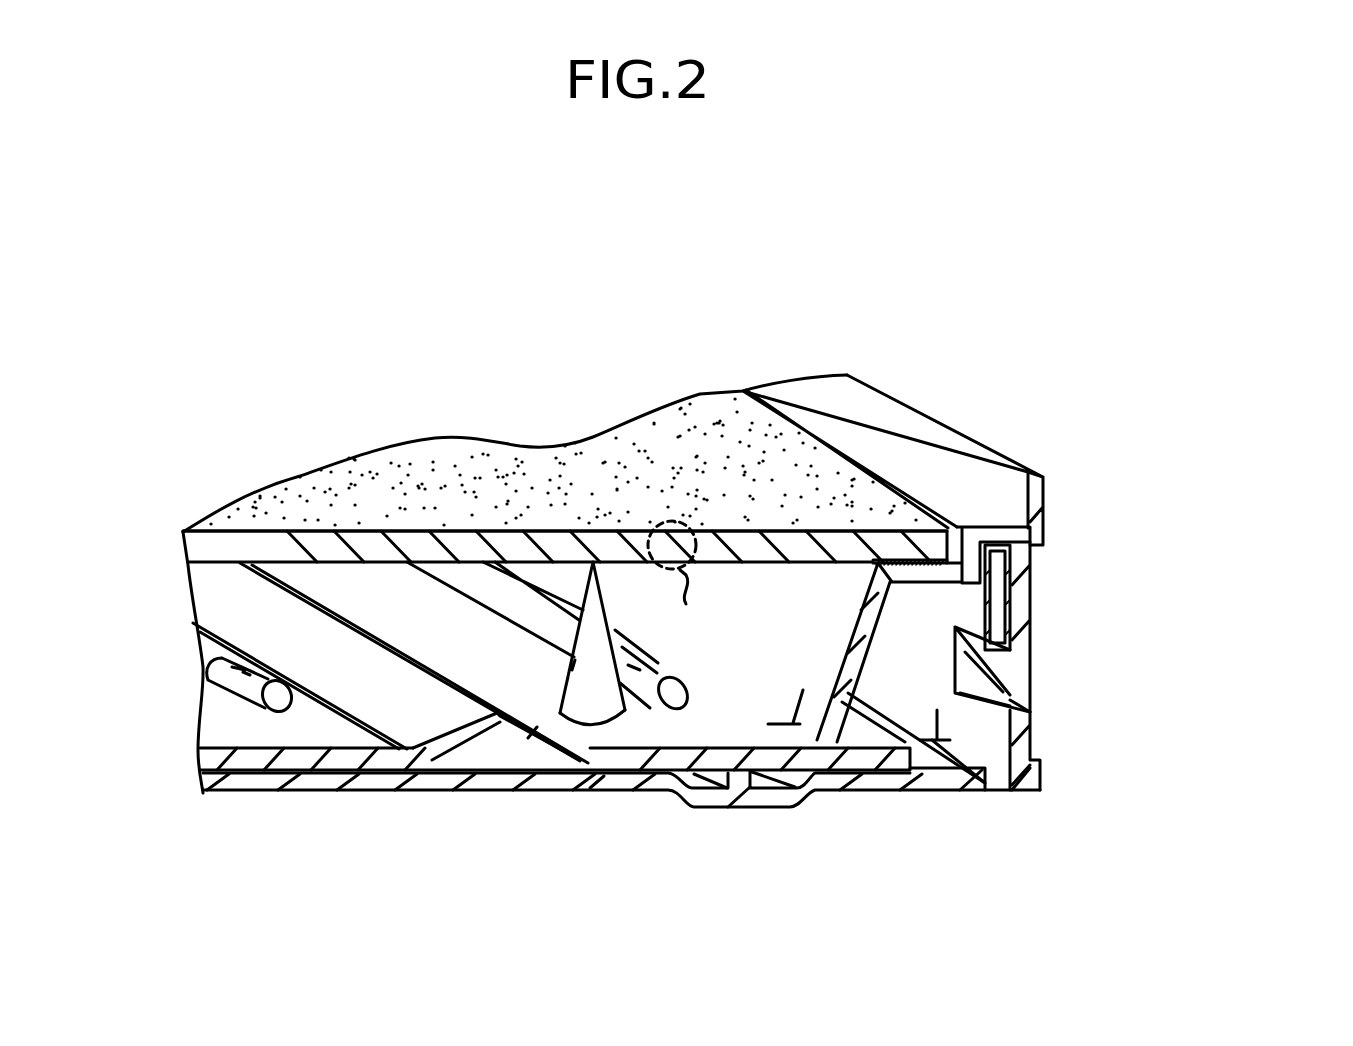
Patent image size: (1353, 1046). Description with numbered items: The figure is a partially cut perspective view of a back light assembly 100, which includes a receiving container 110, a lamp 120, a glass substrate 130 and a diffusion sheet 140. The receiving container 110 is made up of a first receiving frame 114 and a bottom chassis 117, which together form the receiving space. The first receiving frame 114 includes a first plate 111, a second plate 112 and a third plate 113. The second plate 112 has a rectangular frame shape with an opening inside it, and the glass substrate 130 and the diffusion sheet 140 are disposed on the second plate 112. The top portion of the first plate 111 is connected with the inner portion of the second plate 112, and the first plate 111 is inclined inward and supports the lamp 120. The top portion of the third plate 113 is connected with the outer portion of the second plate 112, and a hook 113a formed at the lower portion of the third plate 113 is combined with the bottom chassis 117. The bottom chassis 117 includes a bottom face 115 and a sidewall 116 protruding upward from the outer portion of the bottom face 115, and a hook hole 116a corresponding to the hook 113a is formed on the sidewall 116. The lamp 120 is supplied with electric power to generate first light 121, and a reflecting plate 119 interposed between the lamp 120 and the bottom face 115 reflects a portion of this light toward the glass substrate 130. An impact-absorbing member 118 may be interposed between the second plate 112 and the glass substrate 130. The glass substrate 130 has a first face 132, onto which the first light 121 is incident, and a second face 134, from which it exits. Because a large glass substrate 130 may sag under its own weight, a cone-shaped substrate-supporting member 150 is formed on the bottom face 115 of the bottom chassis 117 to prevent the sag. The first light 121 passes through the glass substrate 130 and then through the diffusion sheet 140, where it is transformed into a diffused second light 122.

The back light assembly 100 is at (1021, 410).
The receiving container 110 is at (1172, 720).
The first plate 111 is at (975, 678).
The second plate 112 is at (990, 606).
The third plate 113 is at (1025, 640).
The hook 113a is at (1022, 686).
The first receiving frame 114 is at (1143, 562).
The bottom face 115 is at (889, 782).
The sidewall 116 is at (972, 768).
The hook hole 116a is at (956, 668).
The bottom chassis 117 is at (985, 856).
The impact-absorbing member 118 is at (963, 578).
The reflecting plate 119 is at (583, 773).
The lamp 120 is at (203, 672).
The first light 121 is at (653, 650).
The second light 122 is at (744, 527).
The glass substrate 130 is at (373, 501).
The first face 132 is at (212, 565).
The second face 134 is at (215, 531).
The diffusion sheet 140 is at (588, 445).
The substrate-supporting member 150 is at (609, 706).